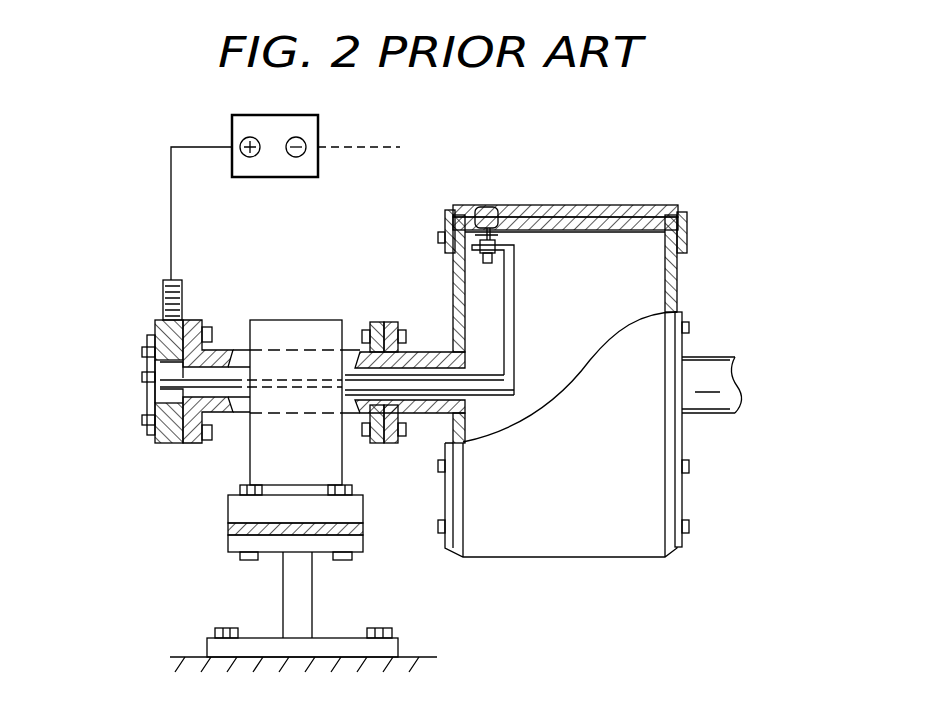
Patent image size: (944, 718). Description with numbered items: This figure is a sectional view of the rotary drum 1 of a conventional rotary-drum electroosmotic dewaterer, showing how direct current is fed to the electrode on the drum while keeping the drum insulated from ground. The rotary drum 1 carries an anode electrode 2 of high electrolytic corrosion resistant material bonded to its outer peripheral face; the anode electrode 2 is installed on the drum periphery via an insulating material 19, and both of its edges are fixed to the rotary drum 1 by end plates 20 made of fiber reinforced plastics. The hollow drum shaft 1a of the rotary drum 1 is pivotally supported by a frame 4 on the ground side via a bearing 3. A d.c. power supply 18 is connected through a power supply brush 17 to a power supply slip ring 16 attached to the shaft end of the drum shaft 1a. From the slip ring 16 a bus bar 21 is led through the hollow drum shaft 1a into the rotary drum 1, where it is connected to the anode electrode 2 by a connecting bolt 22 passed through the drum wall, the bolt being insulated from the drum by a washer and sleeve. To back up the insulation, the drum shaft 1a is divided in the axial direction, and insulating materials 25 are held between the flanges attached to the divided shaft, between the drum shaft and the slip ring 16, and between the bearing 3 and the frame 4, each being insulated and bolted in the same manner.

The rotary drum 1 is at (682, 271).
The drum shaft 1a is at (428, 352).
The anode electrode 2 is at (560, 207).
The bearing 3 is at (297, 328).
The frame 4 is at (312, 602).
The power supply slip ring 16 is at (155, 328).
The power supply brush 17 is at (163, 285).
The d.c. power supply 18 is at (322, 127).
The insulating material 19 is at (633, 210).
The end plates 20 is at (445, 220).
The bus bar 21 is at (515, 313).
The connecting bolt 22 is at (485, 207).
The insulating materials 25 is at (228, 530).